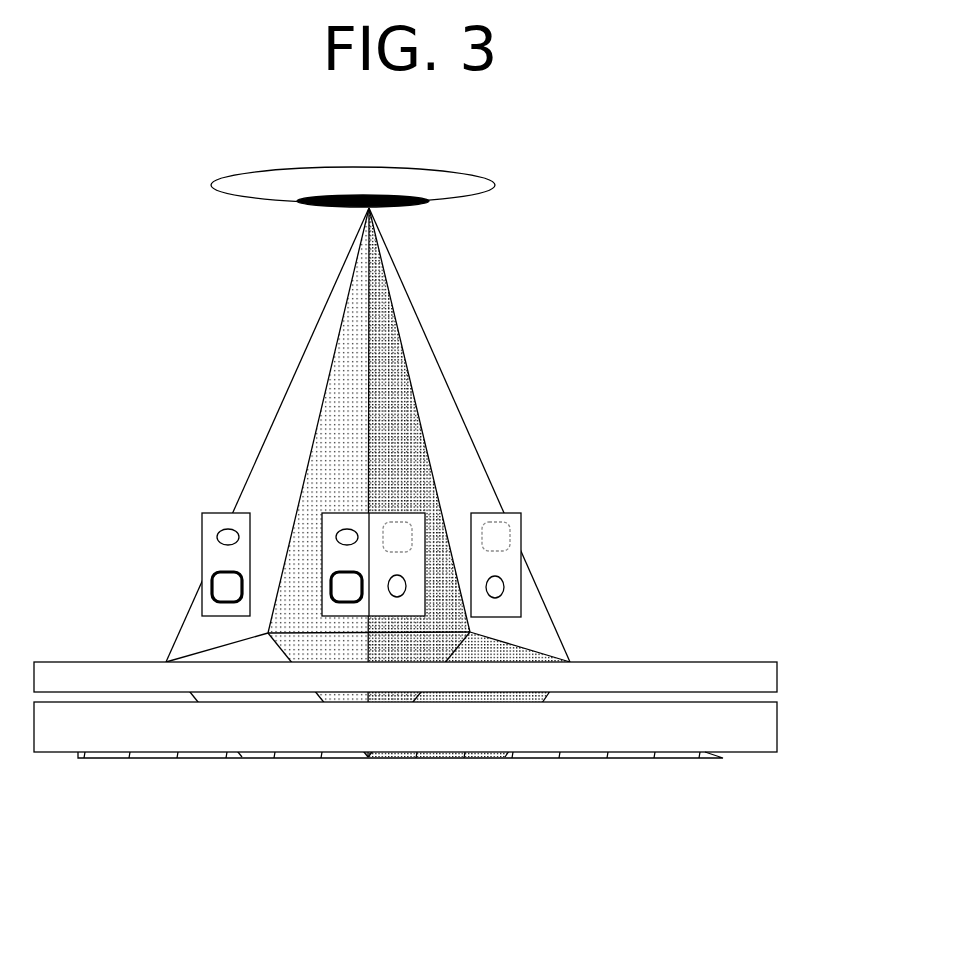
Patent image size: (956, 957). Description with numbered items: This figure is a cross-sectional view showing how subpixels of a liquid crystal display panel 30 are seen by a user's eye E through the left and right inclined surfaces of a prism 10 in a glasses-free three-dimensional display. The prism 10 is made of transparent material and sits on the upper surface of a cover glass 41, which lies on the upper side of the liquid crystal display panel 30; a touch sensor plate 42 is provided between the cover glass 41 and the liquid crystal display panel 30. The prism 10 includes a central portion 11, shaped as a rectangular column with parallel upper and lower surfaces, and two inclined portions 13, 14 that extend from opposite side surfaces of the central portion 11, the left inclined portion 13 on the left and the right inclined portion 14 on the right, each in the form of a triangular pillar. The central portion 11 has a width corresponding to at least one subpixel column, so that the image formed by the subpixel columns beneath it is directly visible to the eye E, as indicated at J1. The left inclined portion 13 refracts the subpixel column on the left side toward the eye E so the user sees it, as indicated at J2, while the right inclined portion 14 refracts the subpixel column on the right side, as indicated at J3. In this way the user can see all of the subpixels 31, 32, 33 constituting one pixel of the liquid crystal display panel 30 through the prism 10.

The user's eye E is at (357, 174).
The prism 10 is at (528, 641).
The central portion 11 is at (443, 630).
The left inclined portion 13 is at (185, 655).
The right inclined portion 14 is at (547, 653).
The image viewed through the central portion J1 is at (395, 513).
The image viewed through the left inclined portion J2 is at (228, 513).
The image viewed through the right inclined portion J3 is at (508, 513).
The subpixel 31 is at (340, 530).
The subpixel 32 is at (230, 588).
The subpixel 33 is at (405, 533).
The cover glass 41 is at (777, 673).
The touch sensor plate 42 is at (777, 723).
The liquid crystal display panel 30 is at (708, 760).